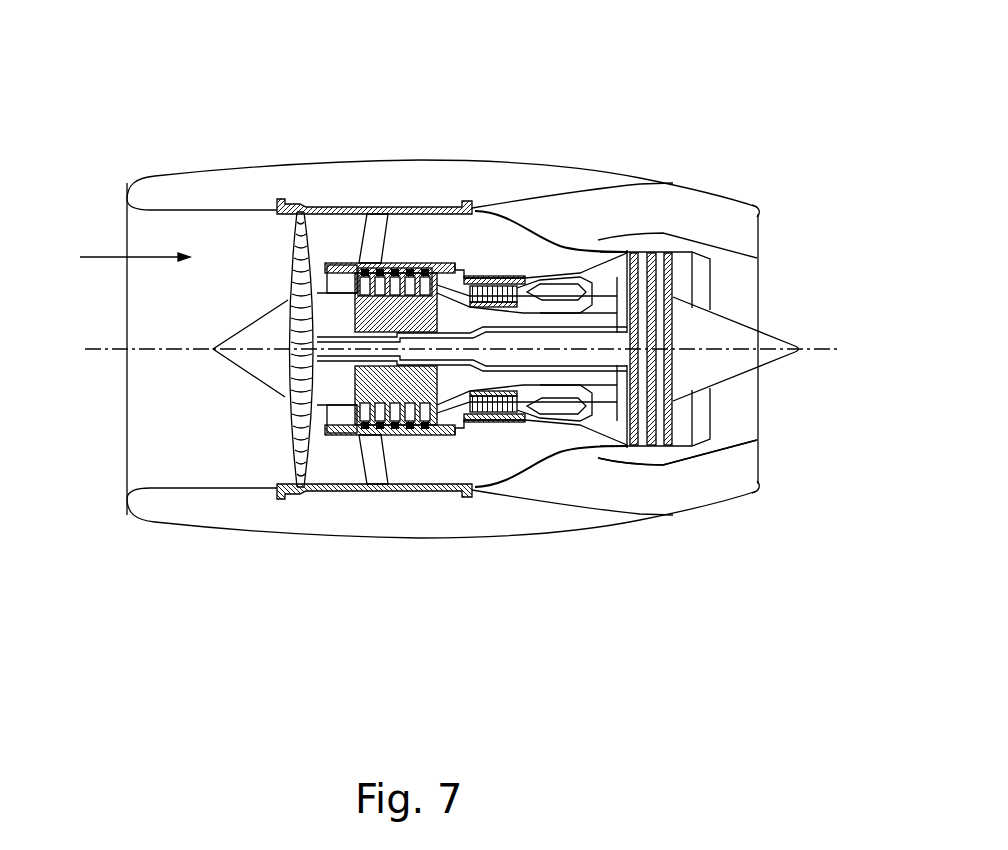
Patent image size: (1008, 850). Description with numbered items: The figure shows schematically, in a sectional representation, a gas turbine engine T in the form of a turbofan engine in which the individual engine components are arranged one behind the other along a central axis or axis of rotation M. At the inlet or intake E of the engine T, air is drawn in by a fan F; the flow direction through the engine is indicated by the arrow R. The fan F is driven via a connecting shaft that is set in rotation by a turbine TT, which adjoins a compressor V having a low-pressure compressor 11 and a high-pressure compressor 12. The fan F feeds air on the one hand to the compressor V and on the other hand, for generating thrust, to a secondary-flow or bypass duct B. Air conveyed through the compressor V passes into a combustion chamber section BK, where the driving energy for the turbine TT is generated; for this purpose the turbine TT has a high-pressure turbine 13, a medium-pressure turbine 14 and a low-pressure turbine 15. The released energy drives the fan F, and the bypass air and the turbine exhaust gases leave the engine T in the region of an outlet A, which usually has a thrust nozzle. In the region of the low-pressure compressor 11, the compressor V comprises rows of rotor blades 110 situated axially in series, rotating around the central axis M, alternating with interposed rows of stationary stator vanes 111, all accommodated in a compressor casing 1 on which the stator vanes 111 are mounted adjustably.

The compressor casing 1 is at (350, 246).
The low-pressure compressor 11 is at (376, 263).
The rotor blades 110 is at (362, 437).
The stator vanes 111 is at (422, 263).
The high-pressure compressor 12 is at (492, 278).
The high-pressure turbine 13 is at (584, 278).
The medium-pressure turbine 14 is at (613, 252).
The low-pressure turbine 15 is at (663, 253).
The outlet A is at (747, 288).
The bypass duct B is at (558, 213).
The combustion chamber section BK is at (546, 440).
The inlet E is at (141, 460).
The fan F is at (293, 245).
The central axis M is at (827, 352).
The flow direction R is at (135, 246).
The gas turbine engine T is at (758, 112).
The turbine TT is at (631, 500).
The compressor V is at (420, 472).